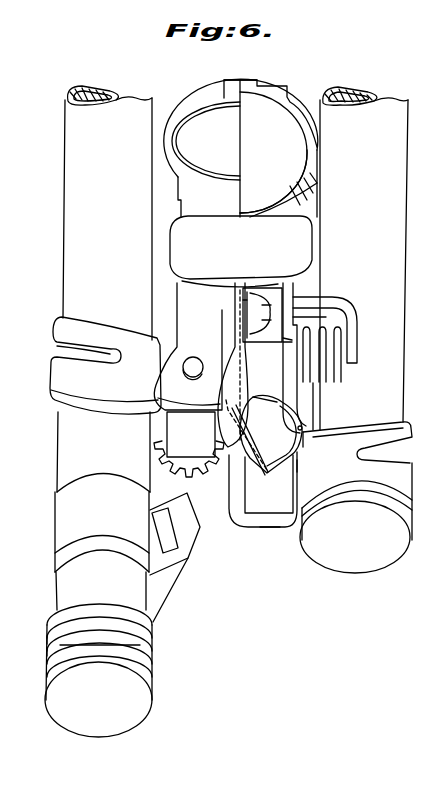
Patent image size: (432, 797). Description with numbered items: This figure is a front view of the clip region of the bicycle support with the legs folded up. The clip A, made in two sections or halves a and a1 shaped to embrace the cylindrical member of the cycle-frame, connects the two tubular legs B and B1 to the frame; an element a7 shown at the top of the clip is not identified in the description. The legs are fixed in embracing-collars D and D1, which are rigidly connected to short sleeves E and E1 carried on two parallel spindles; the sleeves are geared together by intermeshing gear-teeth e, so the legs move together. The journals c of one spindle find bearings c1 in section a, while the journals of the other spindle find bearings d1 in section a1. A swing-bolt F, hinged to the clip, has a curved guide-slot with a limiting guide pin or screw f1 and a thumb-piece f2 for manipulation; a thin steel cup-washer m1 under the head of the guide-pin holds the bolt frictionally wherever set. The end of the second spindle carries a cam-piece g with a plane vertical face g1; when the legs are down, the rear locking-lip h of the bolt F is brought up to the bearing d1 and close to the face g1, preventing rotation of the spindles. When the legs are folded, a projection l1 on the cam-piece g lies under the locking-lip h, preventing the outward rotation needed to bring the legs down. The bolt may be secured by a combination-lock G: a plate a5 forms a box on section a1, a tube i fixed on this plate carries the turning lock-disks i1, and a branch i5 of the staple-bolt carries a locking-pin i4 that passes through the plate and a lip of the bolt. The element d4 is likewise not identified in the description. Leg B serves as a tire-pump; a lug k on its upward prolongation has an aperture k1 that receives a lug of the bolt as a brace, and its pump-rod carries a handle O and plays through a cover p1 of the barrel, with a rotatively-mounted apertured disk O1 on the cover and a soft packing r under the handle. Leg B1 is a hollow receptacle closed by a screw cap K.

The clip A is at (241, 148).
The clip section a is at (165, 132).
The clip section a1 is at (315, 145).
The ring band a7 is at (205, 107).
The plate a5 is at (288, 342).
The tubular leg B is at (104, 348).
The tubular leg B1 is at (364, 258).
The embracing-collar D is at (105, 365).
The embracing-collar D1 is at (357, 442).
The sleeve E is at (191, 434).
The sleeve E1 is at (263, 489).
The swing-bolt F is at (237, 342).
The combination-lock G is at (336, 412).
The screw cap K is at (356, 518).
The handle O is at (98, 670).
The apertured disk O1 is at (50, 647).
The cover p1 is at (48, 640).
The soft packing r is at (85, 648).
The journals c is at (196, 367).
The bearings c1 is at (192, 388).
The bearings d1 is at (271, 527).
The pivot d4 is at (302, 427).
The gear-teeth e is at (190, 477).
The guide pin f1 is at (247, 302).
The thumb-piece f2 is at (241, 398).
The cam-piece g is at (271, 434).
The vertical face g1 is at (283, 467).
The locking-lip h is at (268, 397).
The tube i is at (302, 354).
The lock-disks i1 is at (318, 354).
The locking-pin i4 is at (334, 354).
The staple-bolt branch i5 is at (326, 298).
The lug k is at (168, 582).
The aperture k1 is at (172, 542).
The projection l1 is at (244, 376).
The cup-washer m1 is at (248, 313).